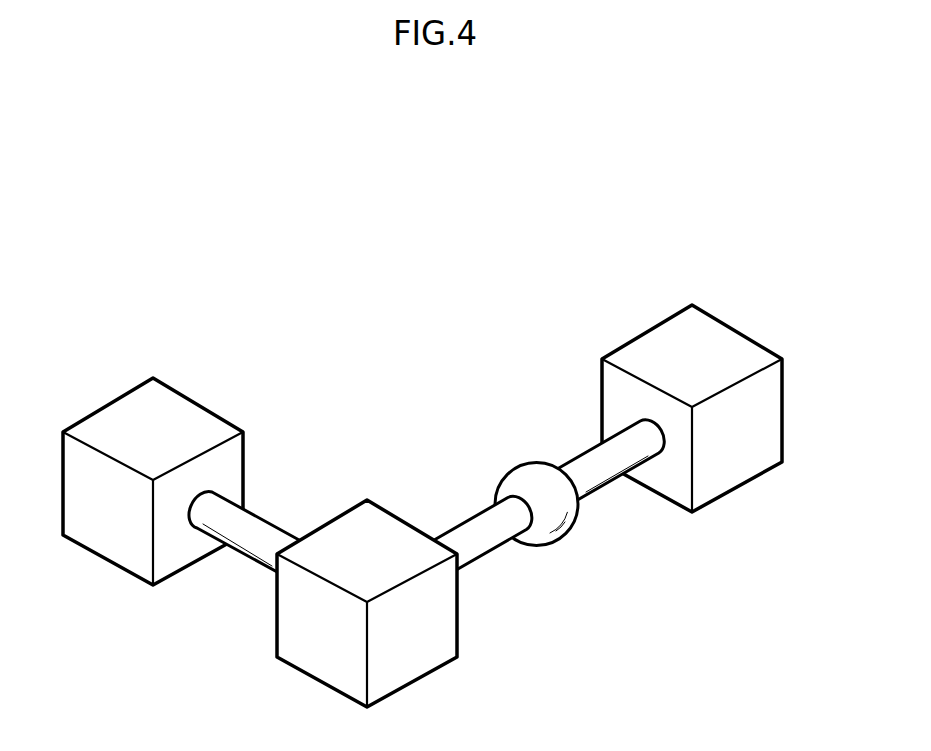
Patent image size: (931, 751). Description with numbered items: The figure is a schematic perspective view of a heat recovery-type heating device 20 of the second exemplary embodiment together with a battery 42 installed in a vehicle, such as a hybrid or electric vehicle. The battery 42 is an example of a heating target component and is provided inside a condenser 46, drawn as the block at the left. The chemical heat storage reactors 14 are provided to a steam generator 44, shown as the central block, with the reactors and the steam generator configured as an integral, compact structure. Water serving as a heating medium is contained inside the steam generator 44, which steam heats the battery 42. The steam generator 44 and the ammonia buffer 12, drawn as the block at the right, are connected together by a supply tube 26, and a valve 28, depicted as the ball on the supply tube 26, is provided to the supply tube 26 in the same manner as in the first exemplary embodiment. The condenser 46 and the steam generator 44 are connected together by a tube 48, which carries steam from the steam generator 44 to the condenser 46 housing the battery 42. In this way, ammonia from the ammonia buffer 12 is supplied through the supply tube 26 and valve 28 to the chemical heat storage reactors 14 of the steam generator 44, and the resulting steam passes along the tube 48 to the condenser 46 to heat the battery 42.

The ammonia buffer 12 is at (672, 317).
The chemical heat storage reactor 14 is at (367, 603).
The heat recovery-type heating device 20 is at (510, 317).
The supply tube 26 is at (591, 446).
The valve 28 is at (513, 467).
The battery 42 is at (153, 481).
The steam generator 44 is at (408, 523).
The condenser 46 is at (137, 387).
The tube 48 is at (271, 517).